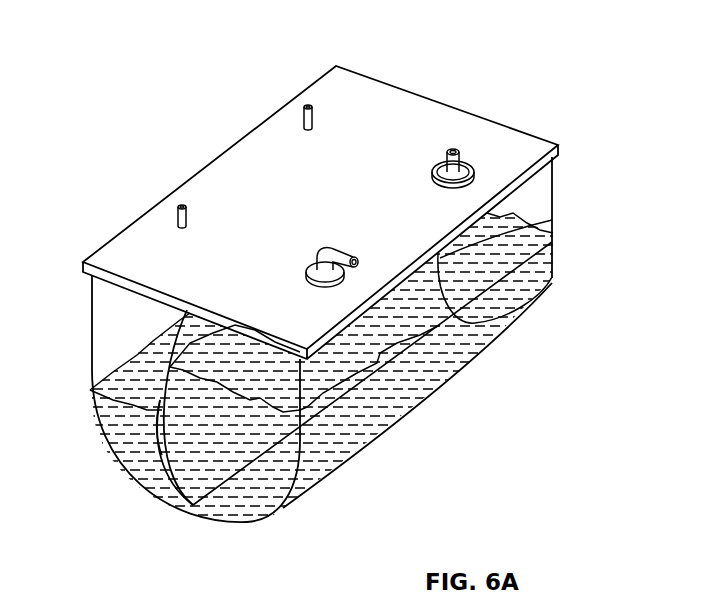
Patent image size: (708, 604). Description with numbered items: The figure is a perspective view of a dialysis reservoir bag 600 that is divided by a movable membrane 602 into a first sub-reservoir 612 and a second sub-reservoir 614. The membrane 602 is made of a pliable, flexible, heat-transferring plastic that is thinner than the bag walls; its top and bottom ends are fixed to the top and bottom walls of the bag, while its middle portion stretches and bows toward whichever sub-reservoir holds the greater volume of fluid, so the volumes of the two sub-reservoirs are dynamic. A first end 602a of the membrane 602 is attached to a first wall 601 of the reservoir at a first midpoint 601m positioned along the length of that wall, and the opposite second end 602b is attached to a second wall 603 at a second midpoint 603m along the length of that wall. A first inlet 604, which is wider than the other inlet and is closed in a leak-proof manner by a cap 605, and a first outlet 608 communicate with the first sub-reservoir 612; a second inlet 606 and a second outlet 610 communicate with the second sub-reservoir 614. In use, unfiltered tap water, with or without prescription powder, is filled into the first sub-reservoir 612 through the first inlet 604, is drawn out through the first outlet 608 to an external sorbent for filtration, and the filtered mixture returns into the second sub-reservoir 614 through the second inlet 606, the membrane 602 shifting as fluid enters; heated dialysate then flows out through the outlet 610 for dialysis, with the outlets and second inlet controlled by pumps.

The dialysis reservoir bag 600 is at (580, 64).
The first wall 601 is at (283, 508).
The first midpoint 601m is at (195, 507).
The movable membrane 602 is at (150, 392).
The first end of the membrane 602a is at (157, 432).
The second end of the membrane 602b is at (547, 232).
The second wall 603 is at (542, 190).
The second midpoint 603m is at (552, 283).
The first inlet 604 is at (468, 160).
The cap 605 is at (448, 157).
The second inlet 606 is at (303, 110).
The first outlet 608 is at (315, 252).
The second outlet 610 is at (178, 212).
The first sub-reservoir 612 is at (417, 388).
The second sub-reservoir 614 is at (100, 305).